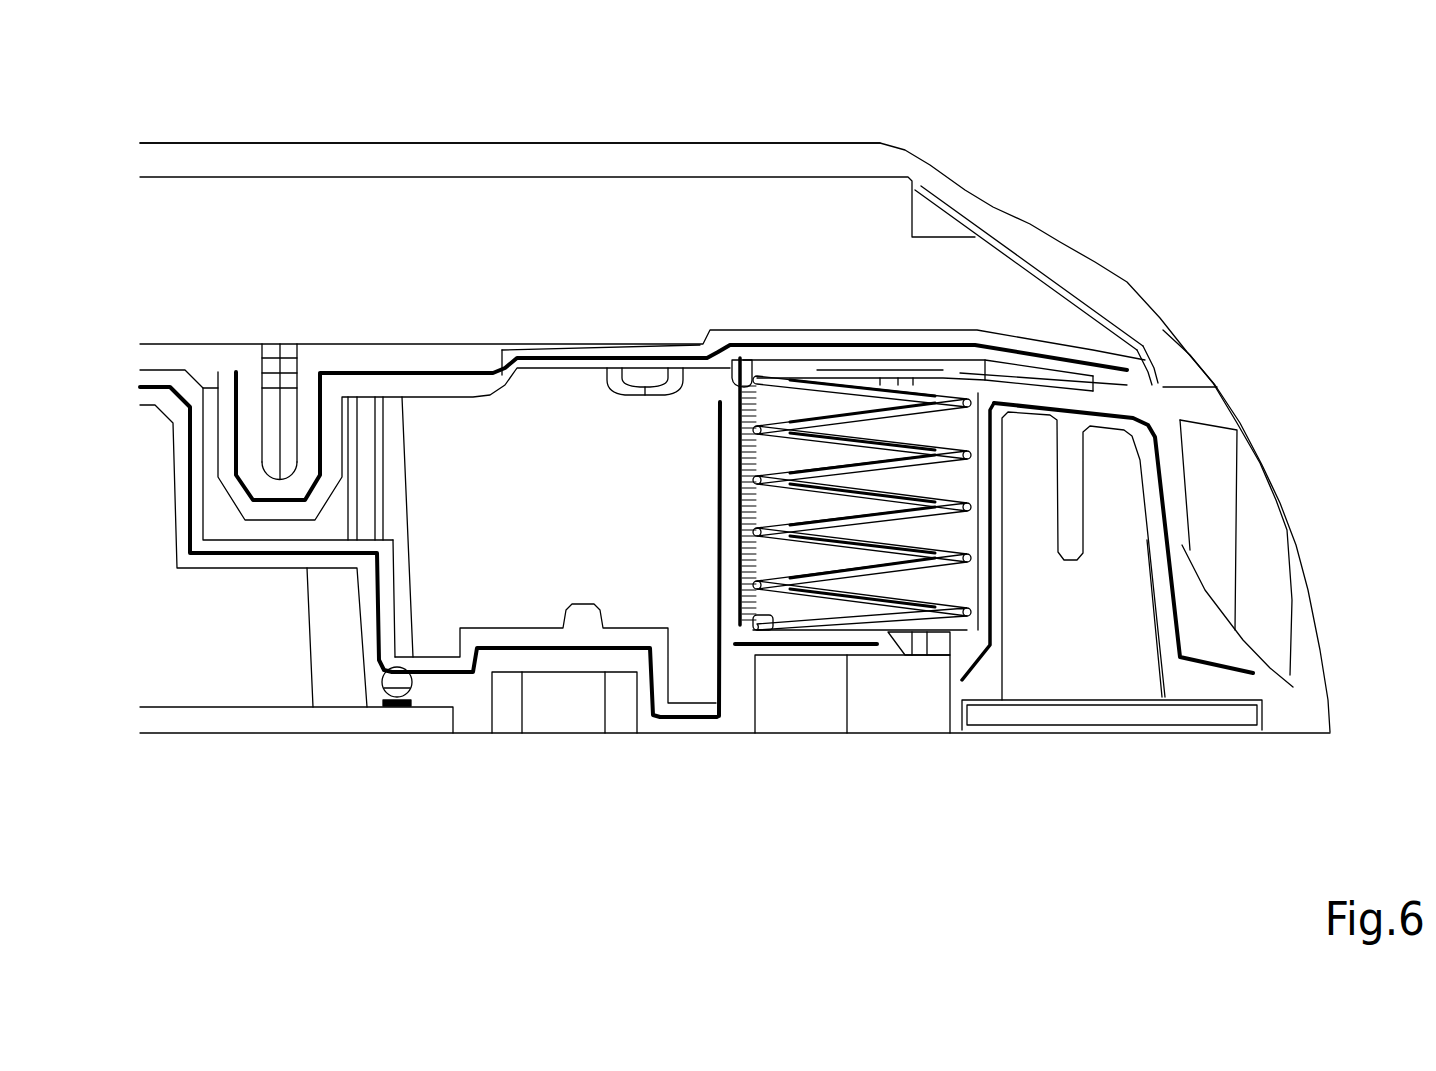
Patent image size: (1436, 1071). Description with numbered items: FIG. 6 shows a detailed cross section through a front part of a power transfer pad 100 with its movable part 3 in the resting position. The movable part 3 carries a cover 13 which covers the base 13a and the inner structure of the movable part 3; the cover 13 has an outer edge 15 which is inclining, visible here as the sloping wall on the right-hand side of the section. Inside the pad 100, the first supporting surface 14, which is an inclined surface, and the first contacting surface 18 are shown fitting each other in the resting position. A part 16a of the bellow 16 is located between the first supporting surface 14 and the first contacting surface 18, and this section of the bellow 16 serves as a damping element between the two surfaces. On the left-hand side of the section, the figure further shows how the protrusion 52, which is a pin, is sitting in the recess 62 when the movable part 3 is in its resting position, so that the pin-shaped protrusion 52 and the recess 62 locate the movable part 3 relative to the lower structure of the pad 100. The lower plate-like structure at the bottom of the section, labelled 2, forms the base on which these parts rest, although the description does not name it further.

The pad 100 is at (1095, 104).
The movable part 3 is at (715, 125).
The cover 13 is at (890, 157).
The base 13a is at (502, 350).
The protrusion 52 is at (322, 437).
The recess 62 is at (255, 540).
The base plate 2 is at (396, 748).
The bellow 16 is at (912, 622).
The part of the bellow 16a is at (1037, 373).
The outer edge 15 is at (1091, 263).
The first contacting surface 18 is at (1128, 384).
The first supporting surface 14 is at (1139, 405).